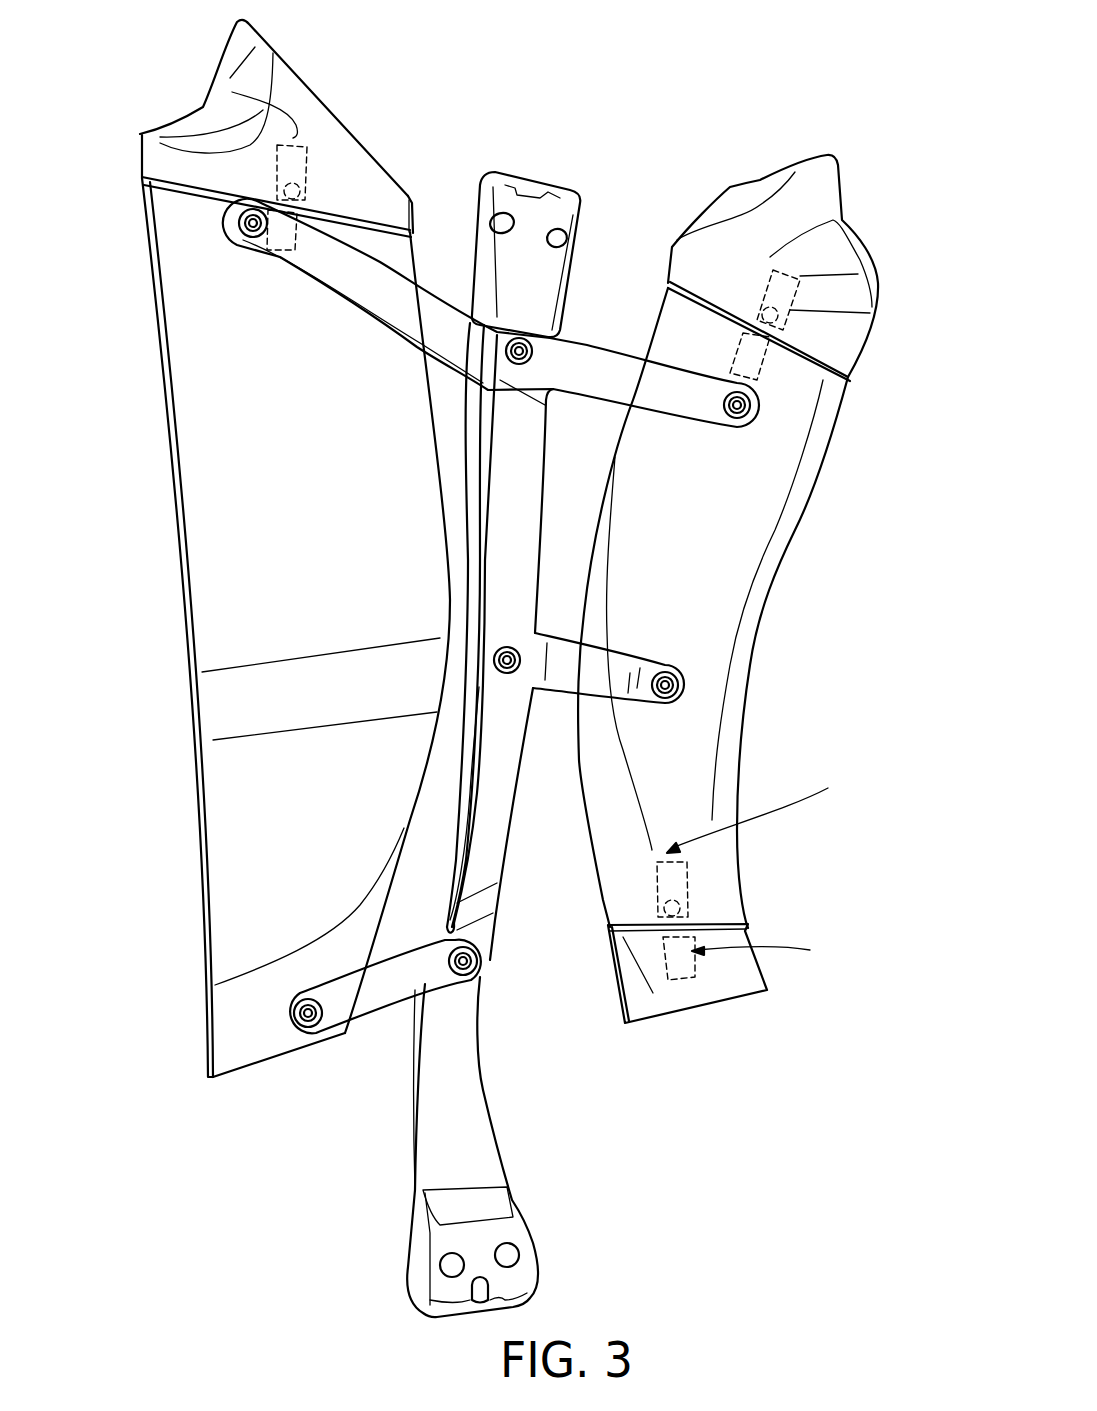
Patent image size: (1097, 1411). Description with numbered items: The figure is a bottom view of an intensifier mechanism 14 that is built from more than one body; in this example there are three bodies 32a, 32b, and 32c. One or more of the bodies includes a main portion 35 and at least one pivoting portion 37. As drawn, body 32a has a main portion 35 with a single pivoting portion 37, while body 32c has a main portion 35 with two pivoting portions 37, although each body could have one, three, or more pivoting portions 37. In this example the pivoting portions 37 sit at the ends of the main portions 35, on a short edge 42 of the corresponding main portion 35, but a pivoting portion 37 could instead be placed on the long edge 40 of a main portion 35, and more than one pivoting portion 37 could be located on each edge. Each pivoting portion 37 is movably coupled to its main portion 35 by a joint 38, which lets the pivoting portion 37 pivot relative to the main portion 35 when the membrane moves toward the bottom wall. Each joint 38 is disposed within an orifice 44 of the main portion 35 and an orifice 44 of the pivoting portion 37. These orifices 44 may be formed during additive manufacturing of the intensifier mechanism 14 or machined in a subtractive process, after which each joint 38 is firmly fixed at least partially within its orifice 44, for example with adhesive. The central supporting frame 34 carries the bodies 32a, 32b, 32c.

The intensifier mechanism 14 is at (505, 661).
The body 32a is at (177, 600).
The body 32b is at (548, 173).
The body 32c is at (745, 682).
The frame member 34 is at (493, 927).
The main portion 35 is at (157, 432).
The pivoting portion 37 is at (221, 53).
The joint 38 is at (277, 163).
The long edge 40 is at (200, 745).
The short edge 42 is at (175, 180).
The orifice 44 is at (762, 864).